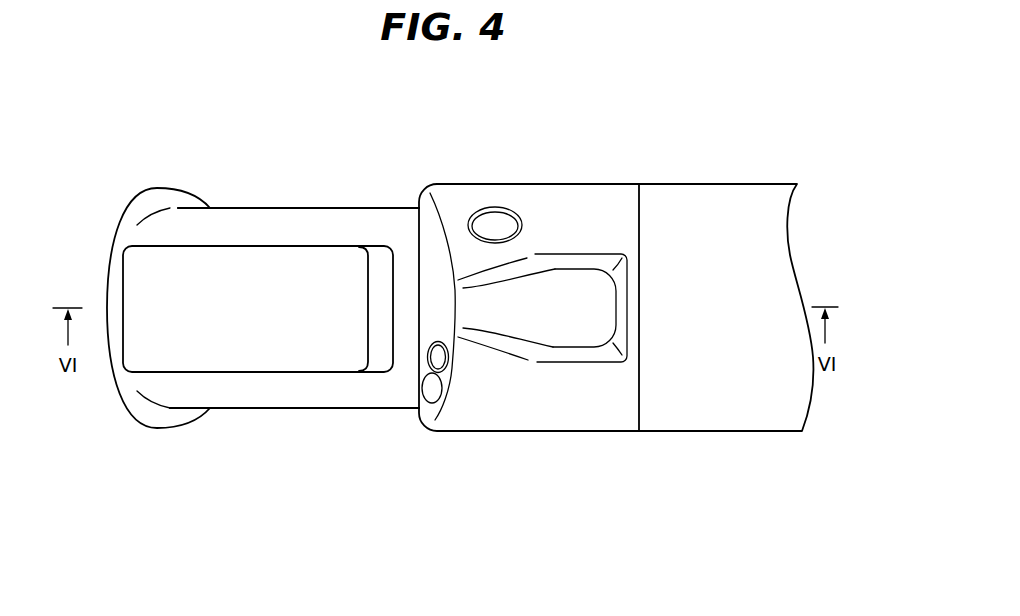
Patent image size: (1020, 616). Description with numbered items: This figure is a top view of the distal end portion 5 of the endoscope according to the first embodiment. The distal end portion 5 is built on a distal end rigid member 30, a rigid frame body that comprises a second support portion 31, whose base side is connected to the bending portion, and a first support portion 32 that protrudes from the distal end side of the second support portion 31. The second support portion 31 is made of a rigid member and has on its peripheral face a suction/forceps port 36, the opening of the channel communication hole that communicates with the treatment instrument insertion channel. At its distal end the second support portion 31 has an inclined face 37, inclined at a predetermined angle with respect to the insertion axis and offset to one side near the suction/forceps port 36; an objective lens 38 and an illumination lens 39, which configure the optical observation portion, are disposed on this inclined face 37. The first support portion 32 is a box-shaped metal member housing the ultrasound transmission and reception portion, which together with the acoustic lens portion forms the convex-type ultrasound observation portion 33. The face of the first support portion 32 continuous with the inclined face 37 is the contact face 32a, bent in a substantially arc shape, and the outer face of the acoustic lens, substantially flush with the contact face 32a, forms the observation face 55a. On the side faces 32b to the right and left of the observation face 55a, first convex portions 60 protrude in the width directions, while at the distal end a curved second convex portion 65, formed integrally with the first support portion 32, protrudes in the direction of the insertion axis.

The distal end portion 5 is at (498, 120).
The distal end rigid member 30 is at (243, 552).
The second support portion 31 is at (810, 510).
The first support portion 32 is at (107, 510).
The contact face 32a is at (322, 387).
The side faces 32b is at (247, 207).
The convex-type ultrasound observation portion 33 is at (289, 156).
The suction/forceps port 36 is at (581, 299).
The inclined face 37 is at (430, 247).
The objective lens 38 is at (440, 359).
The illumination lens 39 is at (431, 390).
The observation face 55a is at (327, 267).
The first convex portions 60 is at (153, 187).
The second convex portion 65 is at (105, 302).